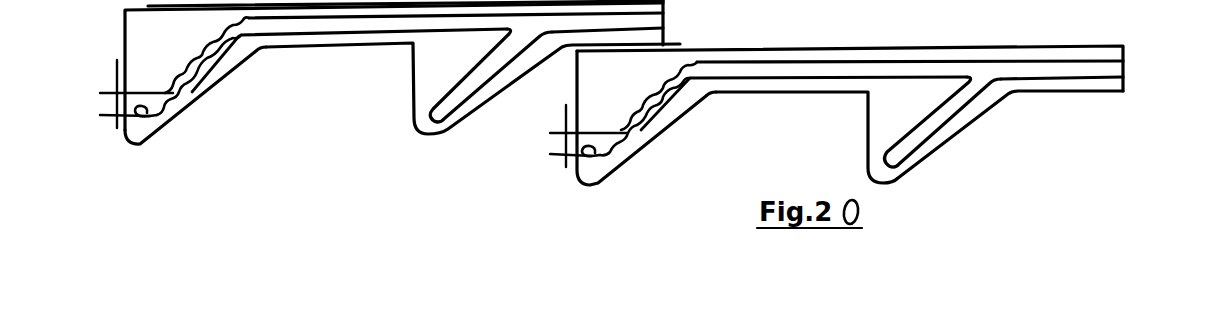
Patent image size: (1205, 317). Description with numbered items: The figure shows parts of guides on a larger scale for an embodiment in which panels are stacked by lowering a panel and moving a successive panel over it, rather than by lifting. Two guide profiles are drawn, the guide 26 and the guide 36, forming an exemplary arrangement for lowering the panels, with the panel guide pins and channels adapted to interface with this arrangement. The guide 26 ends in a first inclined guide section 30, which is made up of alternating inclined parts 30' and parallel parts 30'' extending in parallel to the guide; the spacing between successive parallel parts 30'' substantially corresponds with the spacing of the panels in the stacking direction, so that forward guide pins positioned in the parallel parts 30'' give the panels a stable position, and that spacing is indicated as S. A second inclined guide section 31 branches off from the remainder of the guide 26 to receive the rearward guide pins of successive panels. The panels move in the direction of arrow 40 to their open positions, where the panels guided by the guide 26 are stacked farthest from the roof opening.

The guide 26 is at (358, 23).
The first inclined guide section 30 is at (405, 115).
The inclined parts 30' is at (466, 103).
The parallel parts 30'' is at (431, 73).
The second inclined guide section 31 is at (487, 70).
The guide 36 is at (812, 66).
The arrow 40 is at (965, 22).
The spacing dimension S is at (361, 113).